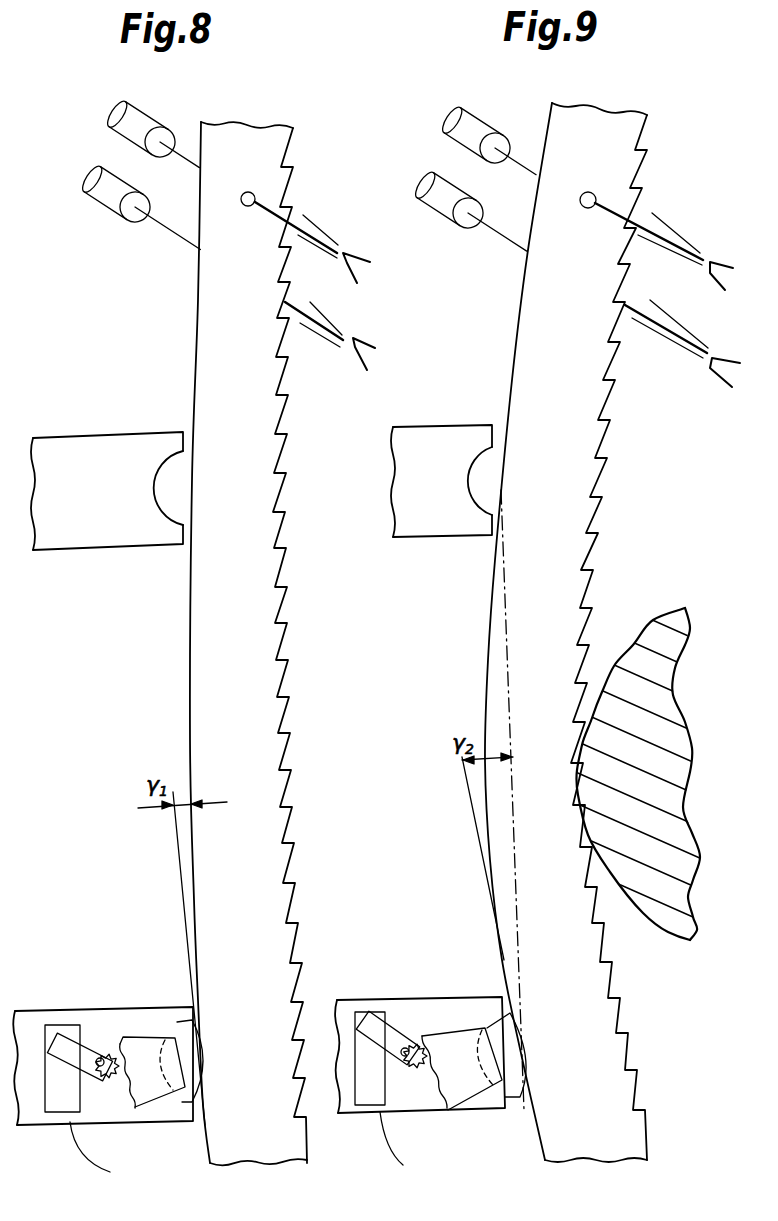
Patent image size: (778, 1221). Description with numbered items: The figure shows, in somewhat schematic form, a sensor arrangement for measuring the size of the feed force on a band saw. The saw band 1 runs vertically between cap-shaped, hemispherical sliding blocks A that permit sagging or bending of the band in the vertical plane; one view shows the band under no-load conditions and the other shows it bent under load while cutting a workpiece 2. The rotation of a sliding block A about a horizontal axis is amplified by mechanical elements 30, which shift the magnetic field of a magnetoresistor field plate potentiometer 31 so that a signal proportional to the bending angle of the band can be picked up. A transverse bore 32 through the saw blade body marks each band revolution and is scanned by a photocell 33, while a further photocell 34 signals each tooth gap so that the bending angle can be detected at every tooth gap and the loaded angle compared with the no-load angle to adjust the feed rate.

In FIG. 8, the saw blade 1 is at (196, 657).
In FIG. 9, the saw blade 1 is at (492, 637).
In FIG. 9, the workpiece 2 is at (643, 637).
In FIG. 8, the mechanical elements 30 is at (103, 1043).
In FIG. 9, the mechanical elements 30 is at (441, 1040).
In FIG. 8, the magnetoresistor field plate potentiometer 31 is at (68, 1025).
In FIG. 9, the magnetoresistor field plate potentiometer 31 is at (360, 1012).
In FIG. 8, the transverse bore 32 is at (241, 199).
In FIG. 9, the transverse bore 32 is at (580, 200).
In FIG. 8, the photocell 33 is at (145, 118).
In FIG. 9, the photocell 33 is at (480, 128).
In FIG. 8, the photocell 34 is at (108, 197).
In FIG. 9, the photocell 34 is at (445, 206).
In FIG. 8, the sliding block A is at (178, 467).
In FIG. 9, the sliding block A is at (487, 460).